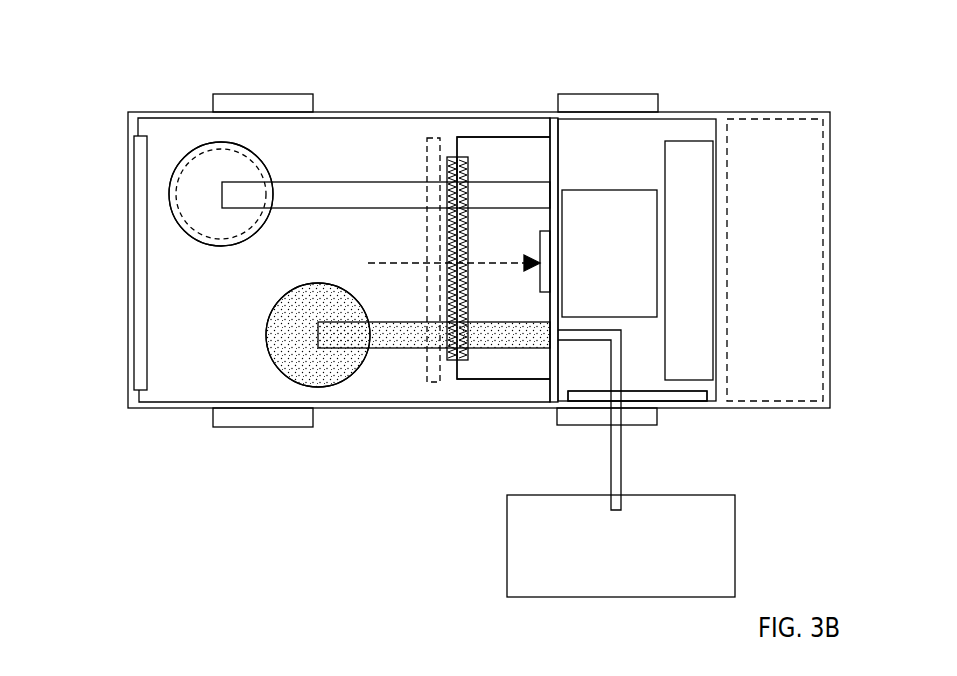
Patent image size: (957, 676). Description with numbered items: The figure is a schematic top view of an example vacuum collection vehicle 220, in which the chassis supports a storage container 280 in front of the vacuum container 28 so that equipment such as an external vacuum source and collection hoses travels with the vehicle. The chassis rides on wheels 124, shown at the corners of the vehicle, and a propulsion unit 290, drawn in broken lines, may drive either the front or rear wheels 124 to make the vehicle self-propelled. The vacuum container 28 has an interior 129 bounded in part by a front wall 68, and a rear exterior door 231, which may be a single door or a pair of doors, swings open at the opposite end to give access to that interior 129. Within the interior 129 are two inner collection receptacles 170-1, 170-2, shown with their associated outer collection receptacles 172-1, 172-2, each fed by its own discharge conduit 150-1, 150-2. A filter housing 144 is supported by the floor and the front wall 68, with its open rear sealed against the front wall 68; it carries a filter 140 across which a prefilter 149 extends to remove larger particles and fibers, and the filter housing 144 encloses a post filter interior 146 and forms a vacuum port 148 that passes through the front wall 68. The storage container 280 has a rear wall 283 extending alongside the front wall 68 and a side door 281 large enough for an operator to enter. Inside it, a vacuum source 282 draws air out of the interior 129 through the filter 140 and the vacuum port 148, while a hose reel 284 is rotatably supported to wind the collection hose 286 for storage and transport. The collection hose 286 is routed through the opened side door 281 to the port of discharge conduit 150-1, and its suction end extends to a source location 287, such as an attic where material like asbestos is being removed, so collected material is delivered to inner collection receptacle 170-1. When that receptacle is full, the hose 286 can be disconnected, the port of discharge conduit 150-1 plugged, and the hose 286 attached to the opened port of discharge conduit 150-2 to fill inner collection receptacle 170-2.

The vacuum container 28 is at (391, 116).
The front wall 68 is at (543, 127).
The wheels 124 is at (225, 93).
The interior 129 is at (163, 146).
The filter 140 is at (453, 156).
The filter housing 144 is at (507, 381).
The post filter interior 146 is at (490, 168).
The vacuum port 148 is at (540, 247).
The prefilter 149 is at (430, 382).
The discharge conduit 150-1 is at (400, 350).
The discharge conduit 150-2 is at (329, 181).
The inner collection receptacle 170-1 is at (273, 340).
The inner collection receptacle 170-2 is at (205, 240).
The outer collection receptacle 172-1 is at (315, 283).
The outer collection receptacle 172-2 is at (175, 178).
The vacuum collection vehicle 220 is at (880, 52).
The rear exterior door 231 is at (134, 373).
The storage container 280 is at (697, 119).
The side door 281 is at (565, 397).
The vacuum source 282 is at (637, 190).
The rear wall 283 is at (560, 152).
The hose reel 284 is at (693, 383).
The collection hose 286 is at (610, 468).
The source location 287 is at (663, 597).
The propulsion unit 290 is at (823, 307).